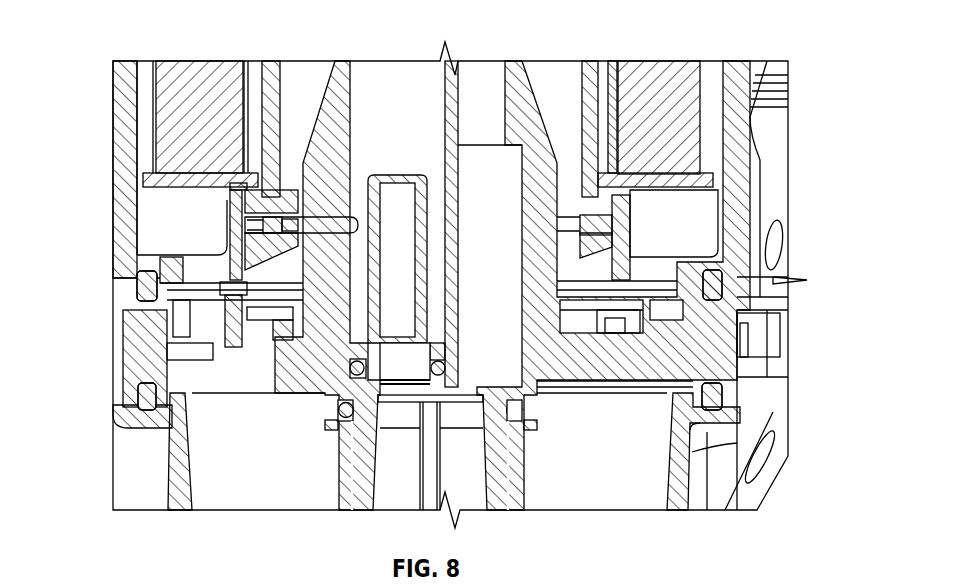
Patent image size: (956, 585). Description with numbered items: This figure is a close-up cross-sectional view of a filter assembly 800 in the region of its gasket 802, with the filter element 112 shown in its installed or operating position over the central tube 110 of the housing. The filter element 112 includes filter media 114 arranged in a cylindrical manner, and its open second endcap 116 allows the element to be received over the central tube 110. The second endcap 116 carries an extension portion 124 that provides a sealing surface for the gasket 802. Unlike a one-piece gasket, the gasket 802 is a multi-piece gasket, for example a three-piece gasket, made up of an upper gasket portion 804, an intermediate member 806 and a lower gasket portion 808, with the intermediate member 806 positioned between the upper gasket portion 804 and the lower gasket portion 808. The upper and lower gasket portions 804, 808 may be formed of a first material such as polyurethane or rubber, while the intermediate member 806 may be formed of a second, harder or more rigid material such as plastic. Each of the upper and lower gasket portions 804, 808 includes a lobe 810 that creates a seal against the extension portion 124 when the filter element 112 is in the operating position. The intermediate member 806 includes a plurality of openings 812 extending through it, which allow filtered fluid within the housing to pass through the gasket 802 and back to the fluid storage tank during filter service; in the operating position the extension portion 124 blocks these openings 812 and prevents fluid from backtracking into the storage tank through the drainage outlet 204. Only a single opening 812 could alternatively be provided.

The filter assembly 800 is at (128, 36).
The filter element 112 is at (147, 125).
The intermediate member 806 is at (242, 230).
The upper gasket portion 804 is at (245, 190).
The drainage outlet 204 is at (316, 222).
The openings 812 is at (130, 289).
The lower gasket portion 808 is at (238, 262).
The central tube 110 is at (590, 70).
The filter media 114 is at (673, 68).
The lobe 810 is at (603, 193).
The second endcap 116 is at (657, 184).
The gasket 802 is at (706, 232).
The extension portion 124 is at (626, 244).